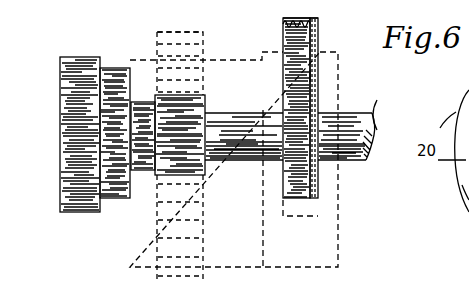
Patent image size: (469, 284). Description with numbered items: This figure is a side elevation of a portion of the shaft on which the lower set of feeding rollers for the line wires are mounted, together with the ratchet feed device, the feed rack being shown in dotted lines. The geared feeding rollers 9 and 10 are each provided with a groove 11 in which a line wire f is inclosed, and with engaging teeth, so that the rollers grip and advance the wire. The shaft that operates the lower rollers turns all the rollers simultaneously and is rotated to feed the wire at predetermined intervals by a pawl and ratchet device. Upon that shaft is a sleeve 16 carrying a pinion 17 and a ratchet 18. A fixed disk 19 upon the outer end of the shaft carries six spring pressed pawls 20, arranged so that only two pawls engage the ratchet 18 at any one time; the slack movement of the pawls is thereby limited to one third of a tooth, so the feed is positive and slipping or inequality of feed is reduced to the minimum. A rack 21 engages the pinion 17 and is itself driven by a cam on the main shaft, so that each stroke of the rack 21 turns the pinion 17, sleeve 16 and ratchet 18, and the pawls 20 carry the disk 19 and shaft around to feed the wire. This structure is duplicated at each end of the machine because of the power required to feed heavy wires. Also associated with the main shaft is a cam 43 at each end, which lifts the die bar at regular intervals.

The geared feeding roller 9 is at (295, 174).
The geared feeding roller 10 is at (320, 52).
The groove 11 is at (318, 62).
The line wire f is at (318, 76).
The sleeve 16 is at (143, 172).
The pinion 17 is at (213, 113).
The ratchet 18 is at (464, 202).
The fixed disk 19 is at (75, 164).
The spring pressed pawl 20 is at (108, 130).
The rack 21 is at (190, 237).
The cam 43 is at (246, 152).